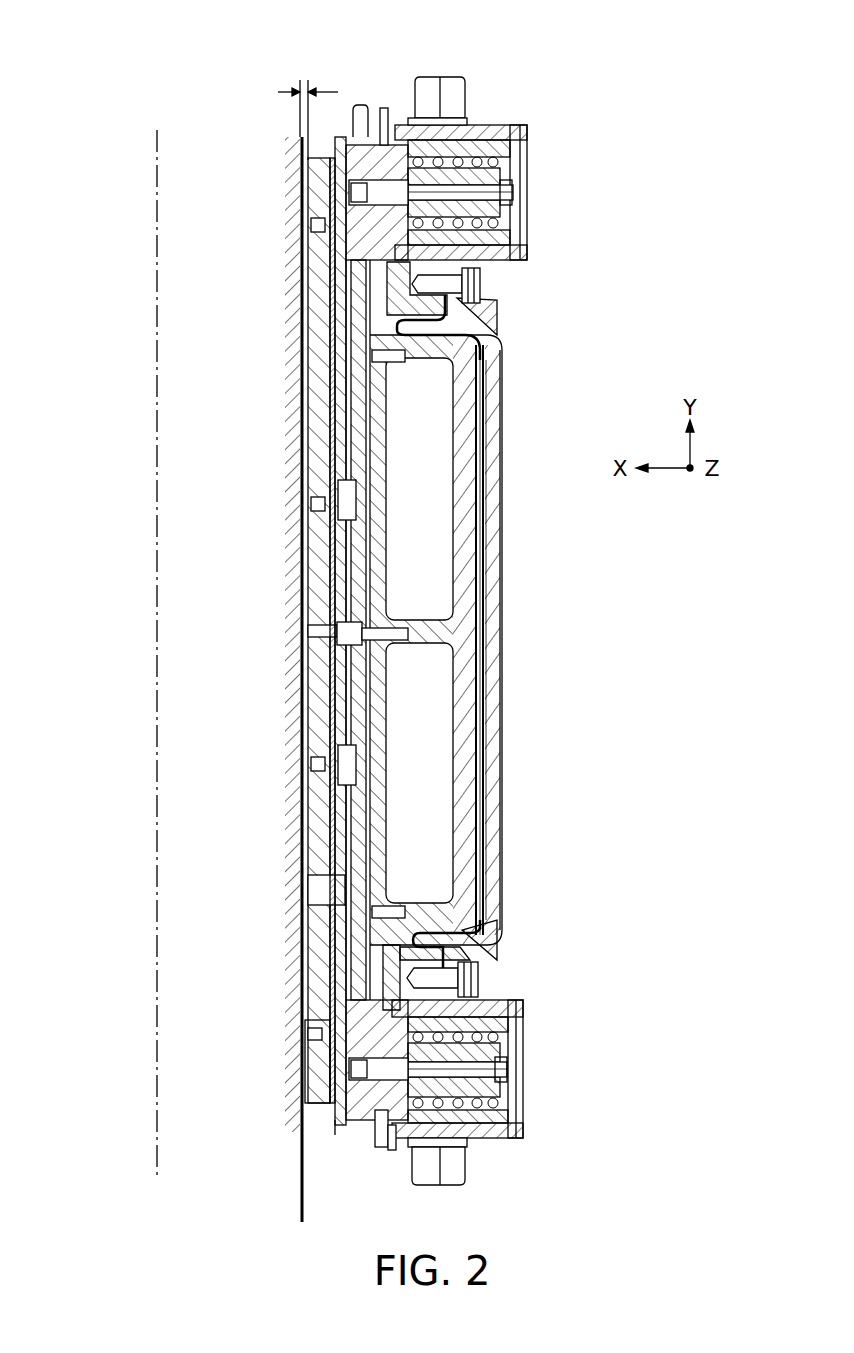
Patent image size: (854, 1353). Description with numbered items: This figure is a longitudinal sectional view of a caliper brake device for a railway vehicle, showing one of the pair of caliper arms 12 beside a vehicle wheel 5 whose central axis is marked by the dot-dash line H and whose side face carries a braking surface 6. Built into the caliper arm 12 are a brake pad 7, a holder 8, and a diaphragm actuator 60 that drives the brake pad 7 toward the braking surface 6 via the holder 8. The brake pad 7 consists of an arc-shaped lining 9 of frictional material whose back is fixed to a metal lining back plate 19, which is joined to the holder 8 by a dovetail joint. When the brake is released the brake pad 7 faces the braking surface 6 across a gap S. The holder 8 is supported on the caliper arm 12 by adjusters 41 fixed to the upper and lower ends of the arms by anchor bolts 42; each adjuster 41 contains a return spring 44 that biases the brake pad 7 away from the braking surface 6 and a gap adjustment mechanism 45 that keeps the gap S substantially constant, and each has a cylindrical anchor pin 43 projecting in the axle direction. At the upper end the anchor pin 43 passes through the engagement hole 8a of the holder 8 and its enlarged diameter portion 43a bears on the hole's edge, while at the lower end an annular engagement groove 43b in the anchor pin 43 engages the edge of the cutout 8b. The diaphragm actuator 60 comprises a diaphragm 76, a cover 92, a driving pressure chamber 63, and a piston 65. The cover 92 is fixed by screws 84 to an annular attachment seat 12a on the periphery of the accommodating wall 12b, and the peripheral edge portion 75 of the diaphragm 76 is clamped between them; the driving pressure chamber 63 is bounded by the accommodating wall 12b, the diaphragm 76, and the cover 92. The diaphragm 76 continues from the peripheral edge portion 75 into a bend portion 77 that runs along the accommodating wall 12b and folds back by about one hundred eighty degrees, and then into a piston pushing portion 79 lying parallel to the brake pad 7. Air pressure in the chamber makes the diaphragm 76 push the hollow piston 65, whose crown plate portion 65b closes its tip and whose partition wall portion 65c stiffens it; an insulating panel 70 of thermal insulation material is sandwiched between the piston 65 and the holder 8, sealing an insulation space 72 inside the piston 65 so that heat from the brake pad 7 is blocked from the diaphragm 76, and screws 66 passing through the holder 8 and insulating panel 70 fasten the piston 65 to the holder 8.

The vehicle wheel 5 is at (247, 200).
The braking surface 6 is at (302, 138).
The brake pad 7 is at (328, 1136).
The holder 8 is at (368, 797).
The engagement hole 8a is at (360, 127).
The cutout 8b is at (368, 1042).
The lining 9 is at (322, 527).
The caliper arm 12 is at (588, 606).
The attachment seat 12a is at (505, 947).
The accommodating wall 12b is at (520, 323).
The lining back plate 19 is at (355, 836).
The adjuster 41 is at (532, 116).
The anchor bolt 42 is at (458, 78).
The anchor pin 43 is at (493, 127).
The enlarged diameter portion 43a is at (384, 123).
The engagement groove 43b is at (362, 1120).
The return spring 44 is at (527, 218).
The gap adjustment mechanism 45 is at (522, 160).
The diaphragm actuator 60 is at (492, 812).
The driving pressure chamber 63 is at (520, 424).
The piston 65 is at (462, 750).
The crown plate portion 65b is at (483, 708).
The partition wall portion 65c is at (430, 650).
The screw 66 is at (372, 352).
The insulating panel 70 is at (370, 715).
The insulation space 72 is at (432, 452).
The peripheral edge portion 75 is at (520, 305).
The diaphragm 76 is at (490, 554).
The bend portion 77 is at (520, 342).
The piston pushing portion 79 is at (483, 505).
The screw 84 is at (520, 278).
The cover 92 is at (520, 397).
The central axis H is at (157, 138).
The gap S is at (308, 81).